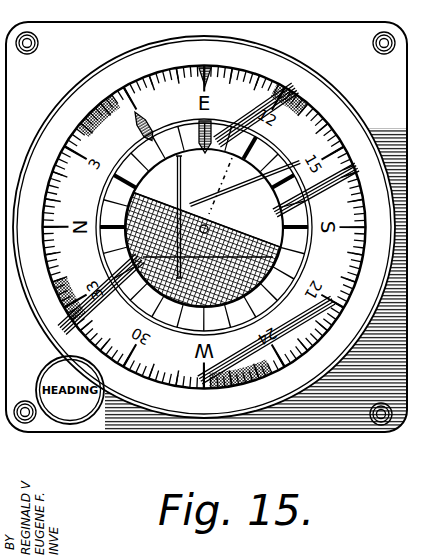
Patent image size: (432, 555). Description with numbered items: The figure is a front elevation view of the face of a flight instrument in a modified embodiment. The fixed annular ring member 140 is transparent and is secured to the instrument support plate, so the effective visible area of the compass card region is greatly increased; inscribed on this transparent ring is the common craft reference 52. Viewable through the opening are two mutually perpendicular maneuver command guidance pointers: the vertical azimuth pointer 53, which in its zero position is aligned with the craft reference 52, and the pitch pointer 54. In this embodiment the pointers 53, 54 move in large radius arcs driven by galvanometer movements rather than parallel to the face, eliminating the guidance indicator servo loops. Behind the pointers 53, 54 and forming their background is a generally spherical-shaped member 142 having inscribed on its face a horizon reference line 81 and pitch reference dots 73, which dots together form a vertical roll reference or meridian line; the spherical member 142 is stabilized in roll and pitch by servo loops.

The fixed annular ring member 140 is at (128, 157).
The common craft reference 52 is at (213, 153).
The azimuth pointer 53 is at (181, 185).
The pitch pointer 54 is at (243, 286).
The pitch reference dots 73 is at (223, 193).
The horizon reference line 81 is at (273, 194).
The spherical-shaped member 142 is at (281, 243).